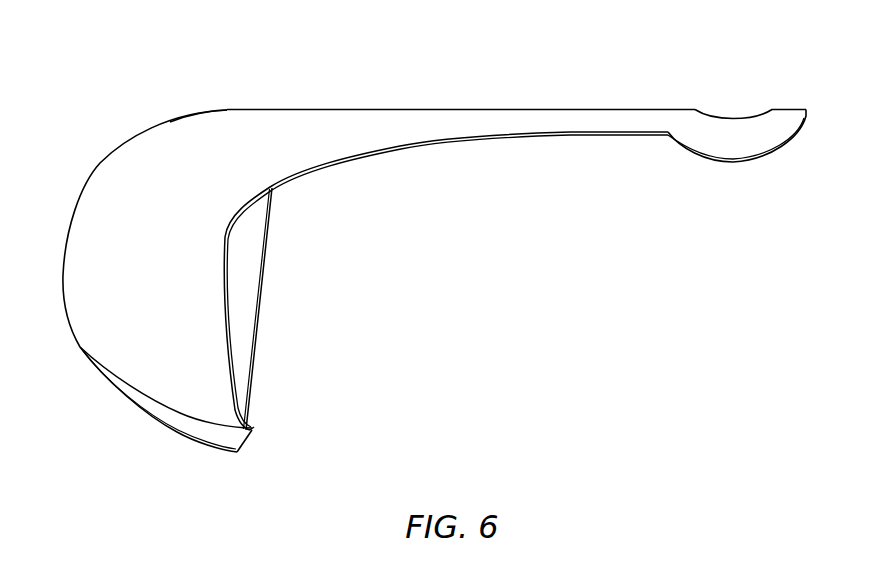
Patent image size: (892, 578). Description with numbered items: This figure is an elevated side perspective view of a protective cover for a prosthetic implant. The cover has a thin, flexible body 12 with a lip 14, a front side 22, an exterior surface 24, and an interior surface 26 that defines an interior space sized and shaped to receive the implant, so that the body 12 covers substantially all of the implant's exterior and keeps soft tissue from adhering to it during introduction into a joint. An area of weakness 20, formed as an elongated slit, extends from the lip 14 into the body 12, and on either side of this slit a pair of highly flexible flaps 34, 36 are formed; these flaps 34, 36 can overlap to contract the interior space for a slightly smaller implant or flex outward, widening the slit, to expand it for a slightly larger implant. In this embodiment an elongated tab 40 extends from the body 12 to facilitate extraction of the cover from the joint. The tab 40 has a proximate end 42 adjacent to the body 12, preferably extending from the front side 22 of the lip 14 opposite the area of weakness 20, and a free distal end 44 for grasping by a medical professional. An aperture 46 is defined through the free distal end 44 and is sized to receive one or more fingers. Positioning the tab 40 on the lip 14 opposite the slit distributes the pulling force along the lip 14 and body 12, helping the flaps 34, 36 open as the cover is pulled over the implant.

The body 12 is at (98, 165).
The lip 14 is at (258, 368).
The area of weakness 20 is at (178, 434).
The front side 22 is at (228, 122).
The exterior surface 24 is at (152, 261).
The interior surface 26 is at (263, 261).
The flap 34 is at (211, 428).
The flap 36 is at (227, 419).
The elongated tab 40 is at (486, 140).
The proximate end 42 is at (283, 110).
The free distal end 44 is at (766, 160).
The aperture 46 is at (735, 118).